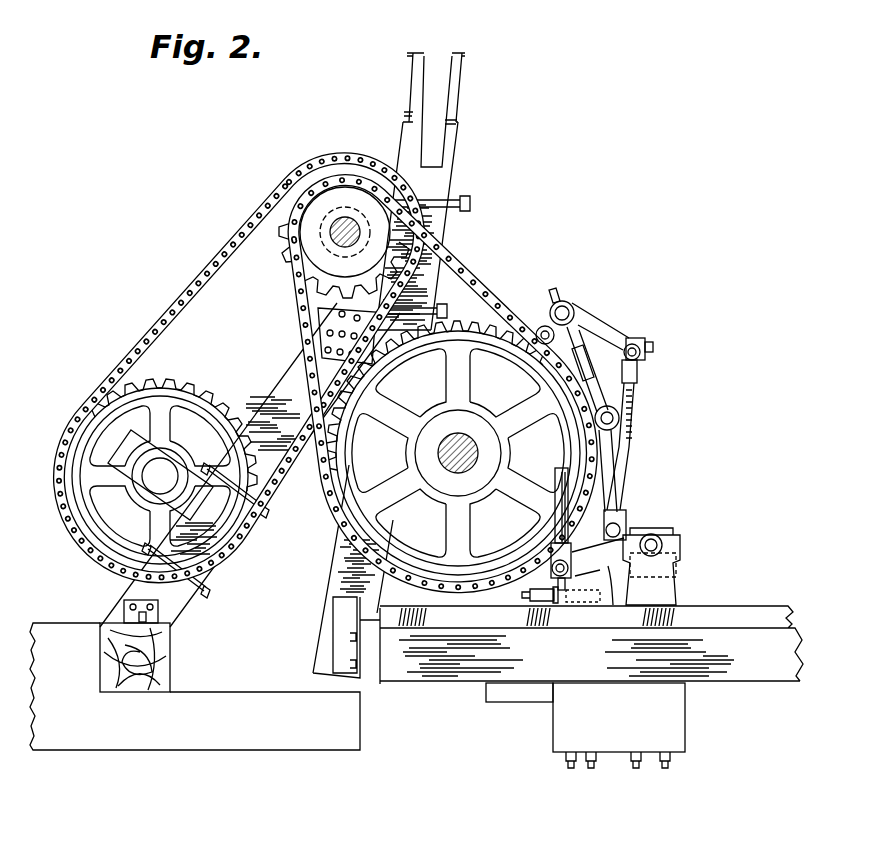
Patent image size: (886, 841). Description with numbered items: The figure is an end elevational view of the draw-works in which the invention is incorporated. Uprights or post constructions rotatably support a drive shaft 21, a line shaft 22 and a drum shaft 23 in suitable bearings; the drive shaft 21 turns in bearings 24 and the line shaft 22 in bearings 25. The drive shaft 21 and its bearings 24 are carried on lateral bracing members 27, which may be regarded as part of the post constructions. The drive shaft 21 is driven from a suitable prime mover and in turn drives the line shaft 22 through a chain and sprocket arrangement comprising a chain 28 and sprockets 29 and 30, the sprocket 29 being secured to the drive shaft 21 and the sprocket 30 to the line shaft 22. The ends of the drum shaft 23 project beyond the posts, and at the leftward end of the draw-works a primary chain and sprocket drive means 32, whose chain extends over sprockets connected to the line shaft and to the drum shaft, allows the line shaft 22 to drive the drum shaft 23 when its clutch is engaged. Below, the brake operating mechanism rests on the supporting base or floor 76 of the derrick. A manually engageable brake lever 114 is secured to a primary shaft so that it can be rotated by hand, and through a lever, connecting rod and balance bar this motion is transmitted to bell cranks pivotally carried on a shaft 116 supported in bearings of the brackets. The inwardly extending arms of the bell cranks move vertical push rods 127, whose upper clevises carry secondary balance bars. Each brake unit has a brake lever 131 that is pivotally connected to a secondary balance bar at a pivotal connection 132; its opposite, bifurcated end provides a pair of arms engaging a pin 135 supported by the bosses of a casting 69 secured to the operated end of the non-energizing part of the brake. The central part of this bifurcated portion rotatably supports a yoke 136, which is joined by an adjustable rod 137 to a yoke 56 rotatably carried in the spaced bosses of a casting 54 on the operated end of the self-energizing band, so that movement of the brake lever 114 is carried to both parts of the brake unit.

The drive shaft 21 is at (168, 468).
The line shaft 22 is at (347, 222).
The drum shaft 23 is at (478, 453).
The bearings 24 is at (112, 493).
The bearings 25 is at (444, 242).
The lateral bracing members 27 is at (208, 540).
The chain 28 is at (203, 269).
The sprocket 29 is at (132, 395).
The sprocket 30 is at (276, 260).
The primary chain and sprocket drive means 32 is at (492, 285).
The casting 54 is at (600, 457).
The yoke 56 is at (620, 417).
The casting 69 is at (542, 327).
The floor of the derrick 76 is at (473, 667).
The brake lever 114 is at (557, 520).
The shaft 116 is at (663, 535).
The vertical push rods 127 is at (627, 478).
The brake lever 131 is at (600, 330).
The pivotal connection 132 is at (648, 340).
The pin 135 is at (556, 340).
The yoke 136 is at (565, 303).
The adjustable rod 137 is at (640, 372).